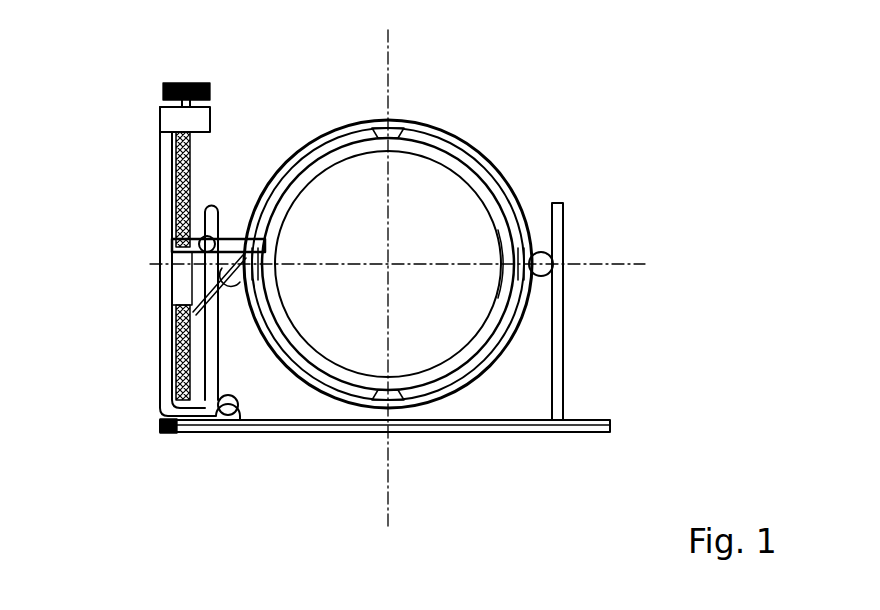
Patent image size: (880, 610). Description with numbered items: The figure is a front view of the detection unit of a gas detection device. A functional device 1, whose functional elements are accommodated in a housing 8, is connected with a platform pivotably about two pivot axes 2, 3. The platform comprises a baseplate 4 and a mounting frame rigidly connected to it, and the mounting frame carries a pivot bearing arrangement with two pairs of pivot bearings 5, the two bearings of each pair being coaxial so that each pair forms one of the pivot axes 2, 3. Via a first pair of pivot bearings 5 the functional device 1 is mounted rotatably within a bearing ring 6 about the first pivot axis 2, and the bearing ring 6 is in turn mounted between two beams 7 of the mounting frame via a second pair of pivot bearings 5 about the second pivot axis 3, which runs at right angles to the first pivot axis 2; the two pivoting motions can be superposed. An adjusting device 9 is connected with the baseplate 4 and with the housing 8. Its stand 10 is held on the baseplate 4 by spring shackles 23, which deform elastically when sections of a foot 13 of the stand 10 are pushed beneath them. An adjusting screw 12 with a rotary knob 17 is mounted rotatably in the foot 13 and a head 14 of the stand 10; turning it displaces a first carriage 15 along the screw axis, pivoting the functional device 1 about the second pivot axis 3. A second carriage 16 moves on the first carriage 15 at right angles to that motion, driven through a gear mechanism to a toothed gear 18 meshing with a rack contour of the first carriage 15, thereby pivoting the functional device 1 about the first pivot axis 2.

The functional device 1 is at (333, 225).
The first pivot axis 2 is at (388, 68).
The second pivot axis 3 is at (608, 267).
The baseplate 4 is at (507, 423).
The pivot bearings 5 is at (382, 123).
The bearing ring 6 is at (490, 163).
The beams 7 is at (563, 372).
The housing 8 is at (450, 362).
The adjusting device 9 is at (185, 65).
The stand 10 is at (167, 330).
The adjusting screw 12 is at (172, 318).
The foot 13 is at (170, 433).
The head 14 is at (185, 120).
The first carriage 15 is at (193, 262).
The second carriage 16 is at (170, 203).
The rotary knob 17 is at (170, 82).
The toothed gear 18 is at (200, 240).
The spring shackles 23 is at (230, 415).